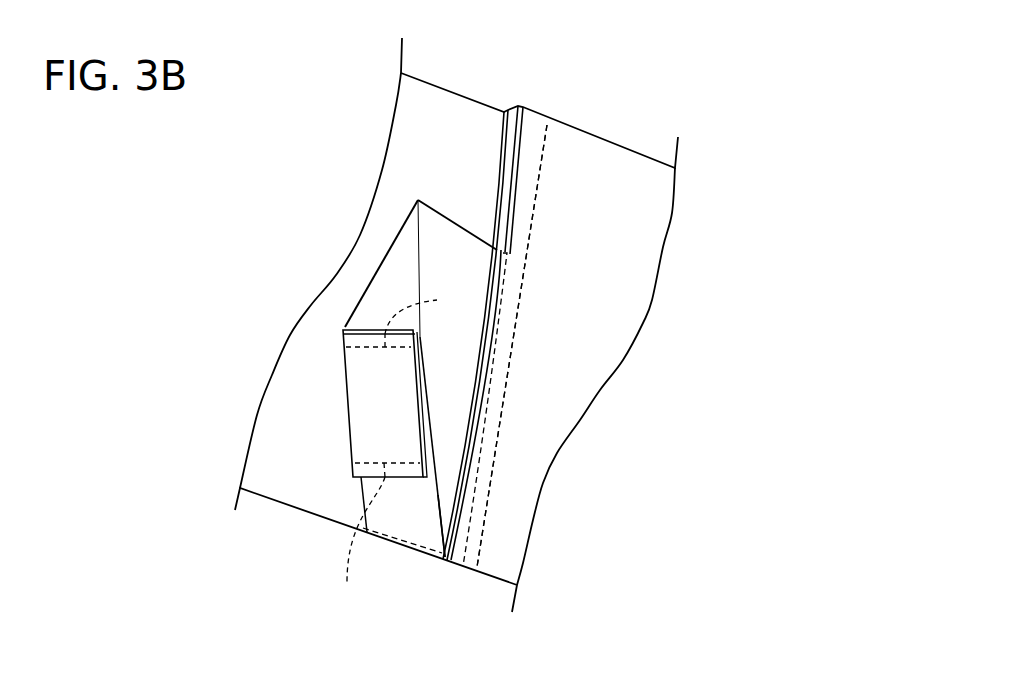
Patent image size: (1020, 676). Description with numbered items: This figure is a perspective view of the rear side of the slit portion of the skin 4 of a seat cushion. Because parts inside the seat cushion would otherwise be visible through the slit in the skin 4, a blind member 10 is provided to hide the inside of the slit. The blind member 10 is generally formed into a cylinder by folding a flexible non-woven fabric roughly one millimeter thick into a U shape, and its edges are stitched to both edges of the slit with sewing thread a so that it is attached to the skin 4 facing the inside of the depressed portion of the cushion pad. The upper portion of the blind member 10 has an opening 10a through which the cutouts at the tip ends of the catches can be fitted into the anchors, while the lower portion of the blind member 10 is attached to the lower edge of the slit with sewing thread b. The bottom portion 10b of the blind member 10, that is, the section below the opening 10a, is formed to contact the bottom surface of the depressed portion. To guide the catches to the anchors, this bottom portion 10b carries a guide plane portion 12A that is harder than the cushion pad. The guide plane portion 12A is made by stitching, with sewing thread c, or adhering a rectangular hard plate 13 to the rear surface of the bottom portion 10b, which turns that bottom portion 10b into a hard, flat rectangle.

The skin 4 is at (637, 252).
The blind member 10 is at (452, 247).
The opening 10a is at (390, 295).
The bottom portion 10b is at (415, 505).
The guide plane portion 12A is at (309, 430).
The hard plate 13 is at (363, 417).
The sewing thread a is at (500, 335).
The sewing thread b is at (418, 550).
The sewing thread c is at (397, 444).